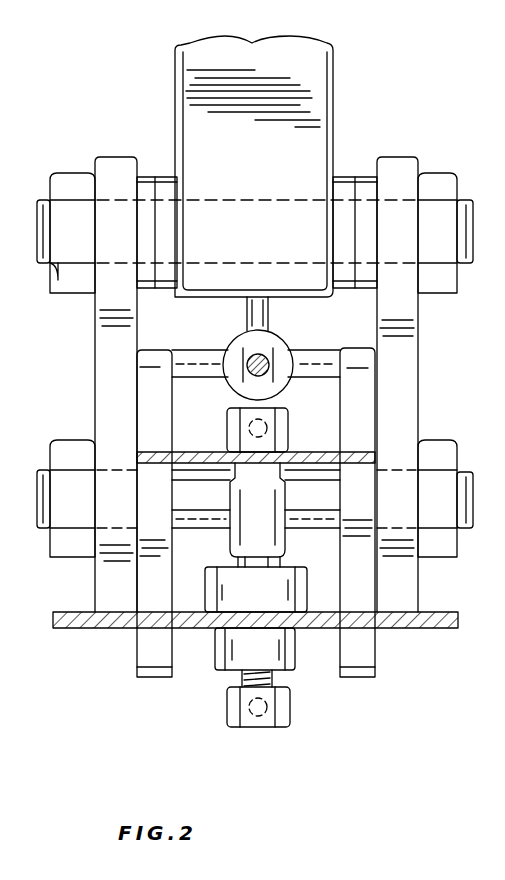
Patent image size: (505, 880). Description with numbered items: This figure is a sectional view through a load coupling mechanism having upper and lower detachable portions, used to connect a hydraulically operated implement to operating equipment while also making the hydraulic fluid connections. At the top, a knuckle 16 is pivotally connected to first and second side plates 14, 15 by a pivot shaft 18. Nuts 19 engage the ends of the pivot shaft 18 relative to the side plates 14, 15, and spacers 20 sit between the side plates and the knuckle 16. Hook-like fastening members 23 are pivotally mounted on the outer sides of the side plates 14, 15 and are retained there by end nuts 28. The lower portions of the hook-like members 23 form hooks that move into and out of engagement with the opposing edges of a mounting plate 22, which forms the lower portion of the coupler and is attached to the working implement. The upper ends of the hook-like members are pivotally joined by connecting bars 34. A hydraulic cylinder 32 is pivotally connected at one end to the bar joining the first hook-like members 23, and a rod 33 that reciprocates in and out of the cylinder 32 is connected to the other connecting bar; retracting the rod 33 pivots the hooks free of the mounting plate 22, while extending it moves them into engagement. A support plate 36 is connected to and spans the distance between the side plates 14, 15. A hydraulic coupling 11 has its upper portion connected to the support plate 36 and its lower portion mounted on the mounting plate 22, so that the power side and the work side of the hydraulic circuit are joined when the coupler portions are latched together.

The hydraulic coupling 11 is at (267, 528).
The first side plate 14 is at (98, 312).
The second side plate 15 is at (395, 312).
The knuckle 16 is at (305, 88).
The pivot shaft 18 is at (170, 198).
The nuts 19 is at (70, 192).
The spacers 20 is at (345, 175).
The mounting plate 22 is at (400, 630).
The first hook-like fastening members 23 is at (103, 585).
The end nuts 28 is at (68, 447).
The hydraulic cylinder 32 is at (288, 352).
The rod 33 is at (245, 368).
The connecting bars 34 is at (208, 350).
The support plate 36 is at (312, 450).